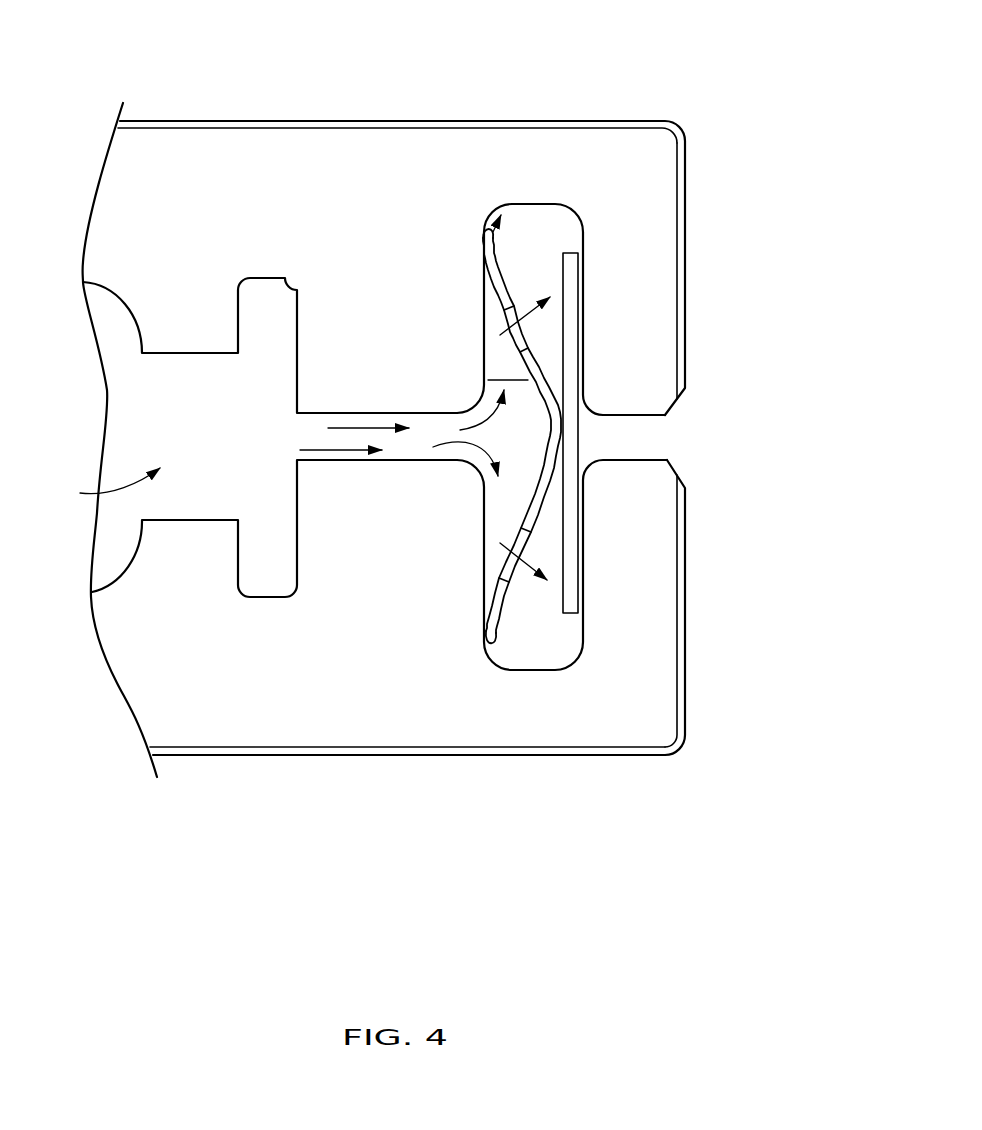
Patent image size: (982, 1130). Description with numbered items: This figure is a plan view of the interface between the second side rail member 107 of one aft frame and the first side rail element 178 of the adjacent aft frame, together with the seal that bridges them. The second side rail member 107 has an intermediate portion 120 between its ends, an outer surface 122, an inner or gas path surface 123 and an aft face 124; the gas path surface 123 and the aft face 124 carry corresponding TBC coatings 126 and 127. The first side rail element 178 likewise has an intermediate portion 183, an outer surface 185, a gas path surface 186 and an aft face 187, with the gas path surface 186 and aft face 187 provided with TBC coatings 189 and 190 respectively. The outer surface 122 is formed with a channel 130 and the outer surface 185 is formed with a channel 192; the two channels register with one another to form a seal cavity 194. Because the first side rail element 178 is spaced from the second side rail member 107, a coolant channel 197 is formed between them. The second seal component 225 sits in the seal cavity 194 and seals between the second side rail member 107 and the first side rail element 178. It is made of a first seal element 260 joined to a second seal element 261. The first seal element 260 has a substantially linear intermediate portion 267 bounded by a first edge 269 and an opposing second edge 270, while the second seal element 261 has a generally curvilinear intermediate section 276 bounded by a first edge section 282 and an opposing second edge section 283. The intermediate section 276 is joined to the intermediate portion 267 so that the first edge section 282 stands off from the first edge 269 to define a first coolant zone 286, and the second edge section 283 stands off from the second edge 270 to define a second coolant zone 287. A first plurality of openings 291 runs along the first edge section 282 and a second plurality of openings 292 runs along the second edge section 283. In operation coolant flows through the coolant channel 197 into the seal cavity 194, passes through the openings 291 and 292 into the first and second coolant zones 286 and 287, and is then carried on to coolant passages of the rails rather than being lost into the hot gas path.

The second side rail member 107 is at (303, 770).
The intermediate portion 120 is at (445, 693).
The outer surface 122 is at (297, 455).
The gas path surface 123 is at (488, 750).
The aft face 124 is at (680, 643).
The TBC coating 126 is at (335, 752).
The TBC coating 127 is at (680, 565).
The channel 130 is at (488, 650).
The first side rail element 178 is at (528, 108).
The intermediate portion 183 is at (180, 147).
The outer surface 185 is at (295, 426).
The gas path surface 186 is at (230, 128).
The aft face 187 is at (678, 317).
The TBC coating 189 is at (388, 127).
The TBC coating 190 is at (685, 350).
The channel 192 is at (488, 238).
The seal cavity 194 is at (510, 367).
The coolant channel 197 is at (97, 488).
The second seal component 225 is at (670, 452).
The first seal element 260 is at (584, 508).
The second seal element 261 is at (536, 490).
The intermediate portion 267 is at (583, 462).
The first edge 269 is at (572, 617).
The second edge 270 is at (573, 250).
The intermediate section 276 is at (493, 422).
The first edge section 282 is at (485, 613).
The second edge section 283 is at (485, 259).
The first coolant zone 286 is at (548, 623).
The second coolant zone 287 is at (547, 275).
The first plurality of openings 291 is at (503, 583).
The second plurality of openings 292 is at (507, 311).